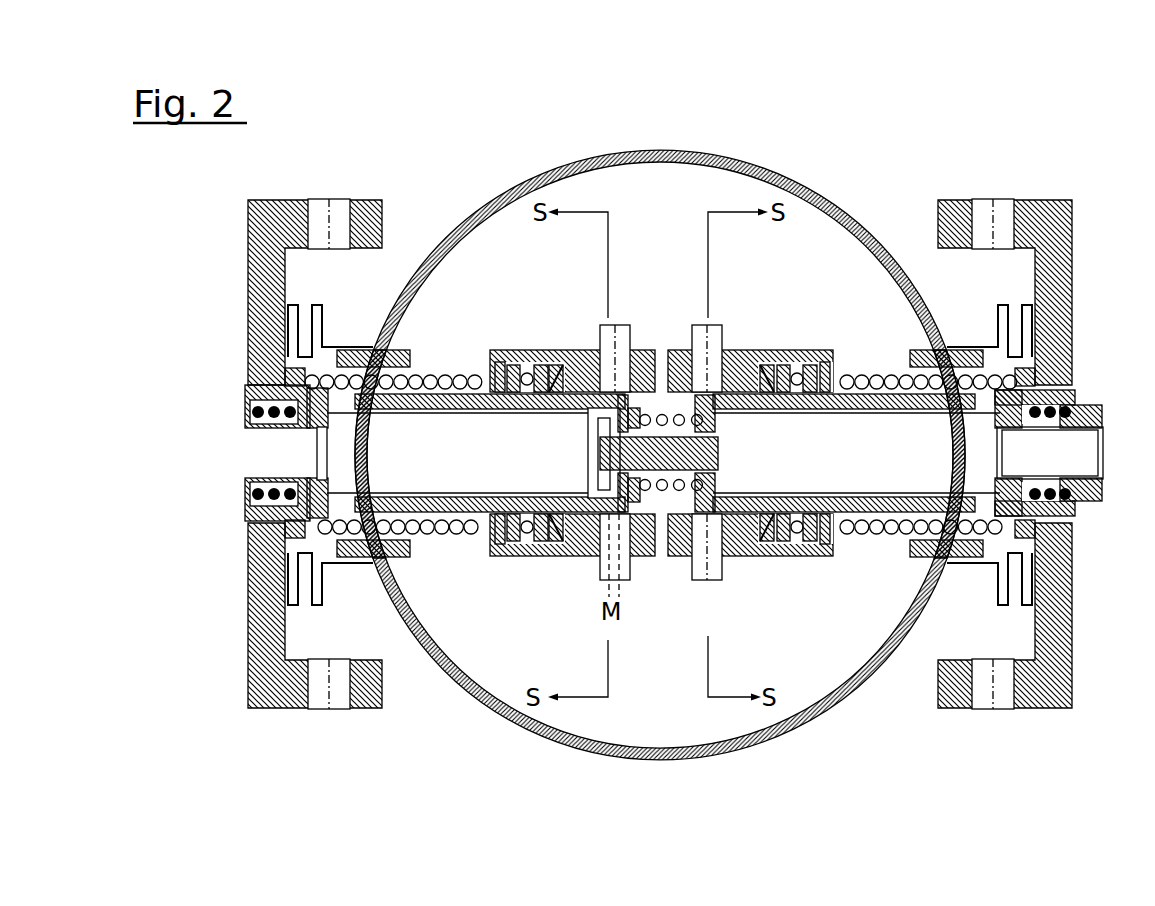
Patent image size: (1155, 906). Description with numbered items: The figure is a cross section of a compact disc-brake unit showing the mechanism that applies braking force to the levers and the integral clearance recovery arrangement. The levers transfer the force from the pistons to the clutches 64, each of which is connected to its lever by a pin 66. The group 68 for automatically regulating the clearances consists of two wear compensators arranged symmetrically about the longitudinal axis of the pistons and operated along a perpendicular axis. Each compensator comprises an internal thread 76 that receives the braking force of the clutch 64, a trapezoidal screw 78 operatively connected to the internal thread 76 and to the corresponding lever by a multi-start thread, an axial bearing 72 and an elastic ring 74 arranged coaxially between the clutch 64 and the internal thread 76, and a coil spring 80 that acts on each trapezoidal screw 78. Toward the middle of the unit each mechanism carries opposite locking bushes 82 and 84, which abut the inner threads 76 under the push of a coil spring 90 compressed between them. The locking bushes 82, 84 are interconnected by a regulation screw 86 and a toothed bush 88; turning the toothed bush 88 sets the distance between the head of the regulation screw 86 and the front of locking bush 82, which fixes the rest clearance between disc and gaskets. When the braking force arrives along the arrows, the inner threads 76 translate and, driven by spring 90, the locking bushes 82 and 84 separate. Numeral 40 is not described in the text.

The adjusting pin 40 is at (735, 517).
The clutch 64 is at (582, 352).
The pin 66 is at (602, 328).
The group for automatically regulating the clearances 68 is at (621, 312).
The axial bearing 72 is at (538, 556).
The elastic ring 74 is at (500, 548).
The internal thread 76 is at (485, 404).
The trapezoidal screw 78 is at (380, 460).
The coil spring 80 is at (889, 370).
The locking bush 82 is at (590, 403).
The locking bush 84 is at (745, 400).
The regulation screw 86 is at (718, 462).
The toothed bush 88 is at (612, 478).
The coil spring 90 is at (662, 414).